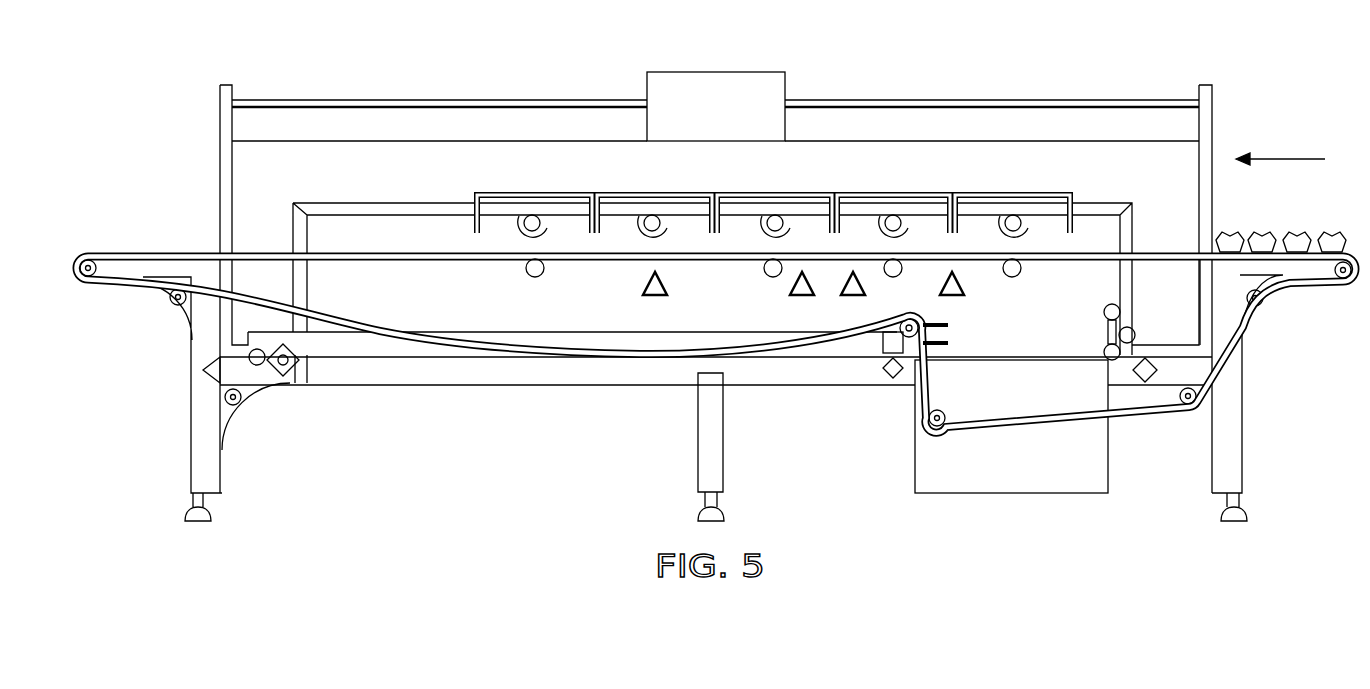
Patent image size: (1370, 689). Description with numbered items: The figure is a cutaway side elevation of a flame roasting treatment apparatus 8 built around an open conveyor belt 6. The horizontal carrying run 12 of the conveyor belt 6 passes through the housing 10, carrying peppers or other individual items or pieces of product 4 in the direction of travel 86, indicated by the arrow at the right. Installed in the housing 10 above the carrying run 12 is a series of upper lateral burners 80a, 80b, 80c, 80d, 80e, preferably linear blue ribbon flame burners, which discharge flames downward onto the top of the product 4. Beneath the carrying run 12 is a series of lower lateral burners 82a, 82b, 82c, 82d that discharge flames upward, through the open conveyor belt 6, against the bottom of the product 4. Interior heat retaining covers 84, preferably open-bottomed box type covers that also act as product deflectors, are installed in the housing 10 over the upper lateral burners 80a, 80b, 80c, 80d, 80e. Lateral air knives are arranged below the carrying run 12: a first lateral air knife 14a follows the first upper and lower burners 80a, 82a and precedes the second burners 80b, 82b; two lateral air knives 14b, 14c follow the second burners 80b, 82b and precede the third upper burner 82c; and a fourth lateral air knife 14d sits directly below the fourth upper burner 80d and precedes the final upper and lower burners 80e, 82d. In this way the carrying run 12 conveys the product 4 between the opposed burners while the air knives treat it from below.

The product 4 is at (1297, 233).
The open conveyor belt 6 is at (185, 250).
The treatment apparatus 8 is at (336, 128).
The housing 10 is at (428, 141).
The horizontal carrying run 12 is at (135, 242).
The first lateral air knife 14a is at (950, 334).
The lateral air knife 14b is at (853, 297).
The lateral air knife 14c is at (802, 297).
The fourth lateral air knife 14d is at (648, 295).
The upper lateral burner 80a is at (1042, 215).
The upper lateral burner 80b is at (922, 215).
The upper lateral burner 80c is at (805, 215).
The upper lateral burner 80d is at (645, 215).
The upper lateral burner 80e is at (525, 215).
The lower lateral burner 82a is at (1013, 279).
The lower lateral burner 82b is at (893, 278).
The lower lateral burner 82c is at (768, 278).
The lower lateral burner 82d is at (530, 277).
The interior heat retaining cover 84 is at (560, 192).
The direction of travel 86 is at (1293, 157).